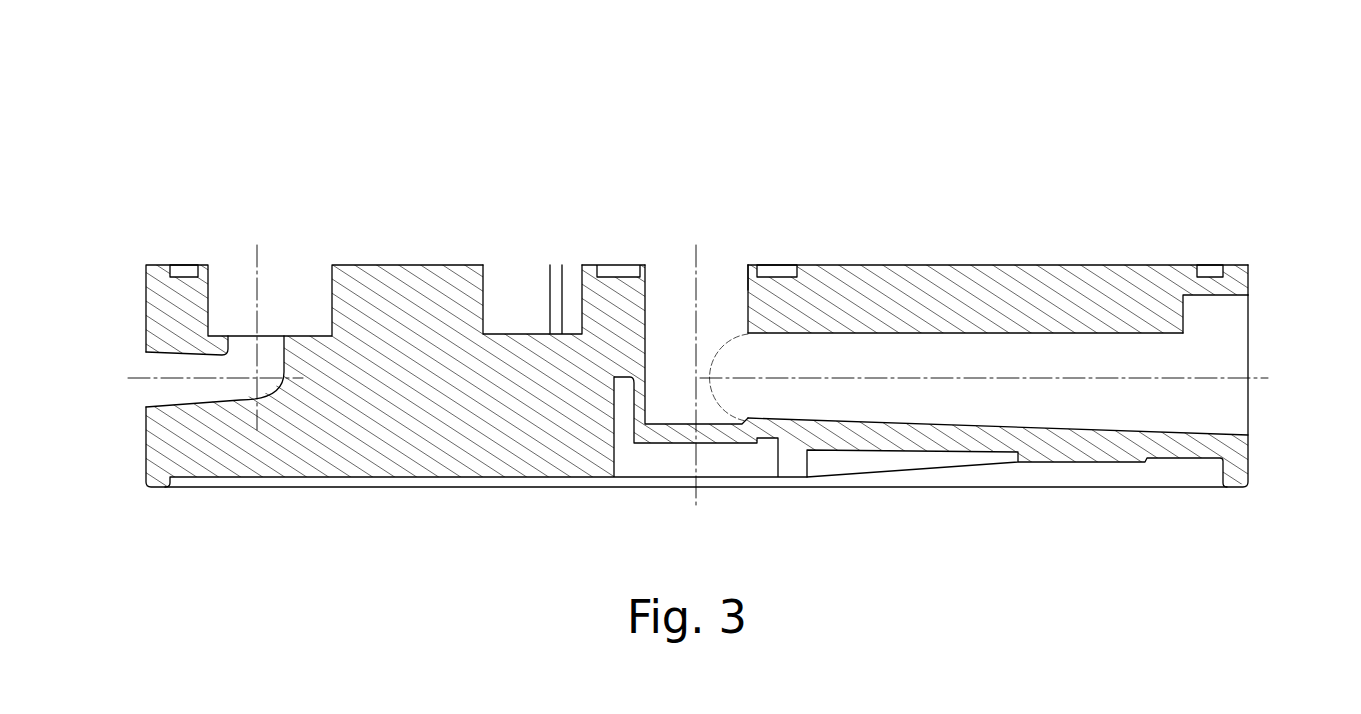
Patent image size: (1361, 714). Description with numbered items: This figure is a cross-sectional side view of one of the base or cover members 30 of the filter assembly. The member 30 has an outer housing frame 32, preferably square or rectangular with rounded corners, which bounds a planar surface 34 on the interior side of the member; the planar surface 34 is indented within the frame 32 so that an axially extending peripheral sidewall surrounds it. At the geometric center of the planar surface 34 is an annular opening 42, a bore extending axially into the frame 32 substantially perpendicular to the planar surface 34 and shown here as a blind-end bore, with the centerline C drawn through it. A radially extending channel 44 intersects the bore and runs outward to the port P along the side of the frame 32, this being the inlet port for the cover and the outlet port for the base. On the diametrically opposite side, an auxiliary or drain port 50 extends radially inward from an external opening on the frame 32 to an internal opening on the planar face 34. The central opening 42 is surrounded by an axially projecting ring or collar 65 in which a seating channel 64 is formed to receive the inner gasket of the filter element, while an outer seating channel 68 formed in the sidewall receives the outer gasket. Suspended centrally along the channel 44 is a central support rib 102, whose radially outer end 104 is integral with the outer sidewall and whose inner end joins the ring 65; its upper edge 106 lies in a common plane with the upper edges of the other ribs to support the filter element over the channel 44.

The base or cover member 30 is at (1152, 105).
The outer housing frame 32 is at (1250, 288).
The planar surface 34 is at (518, 334).
The annular opening 42 is at (663, 280).
The radially-extending channel 44 is at (1017, 400).
The auxiliary or drain port 50 is at (143, 395).
The seating channel 64 is at (783, 277).
The ring or collar 65 is at (750, 277).
The outer seating channel 68 is at (178, 278).
The central support rib 102 is at (1042, 300).
The radially outer end 104 is at (1250, 272).
The upper edge 106 is at (972, 264).
The centerline C is at (697, 258).
The port P is at (1234, 412).